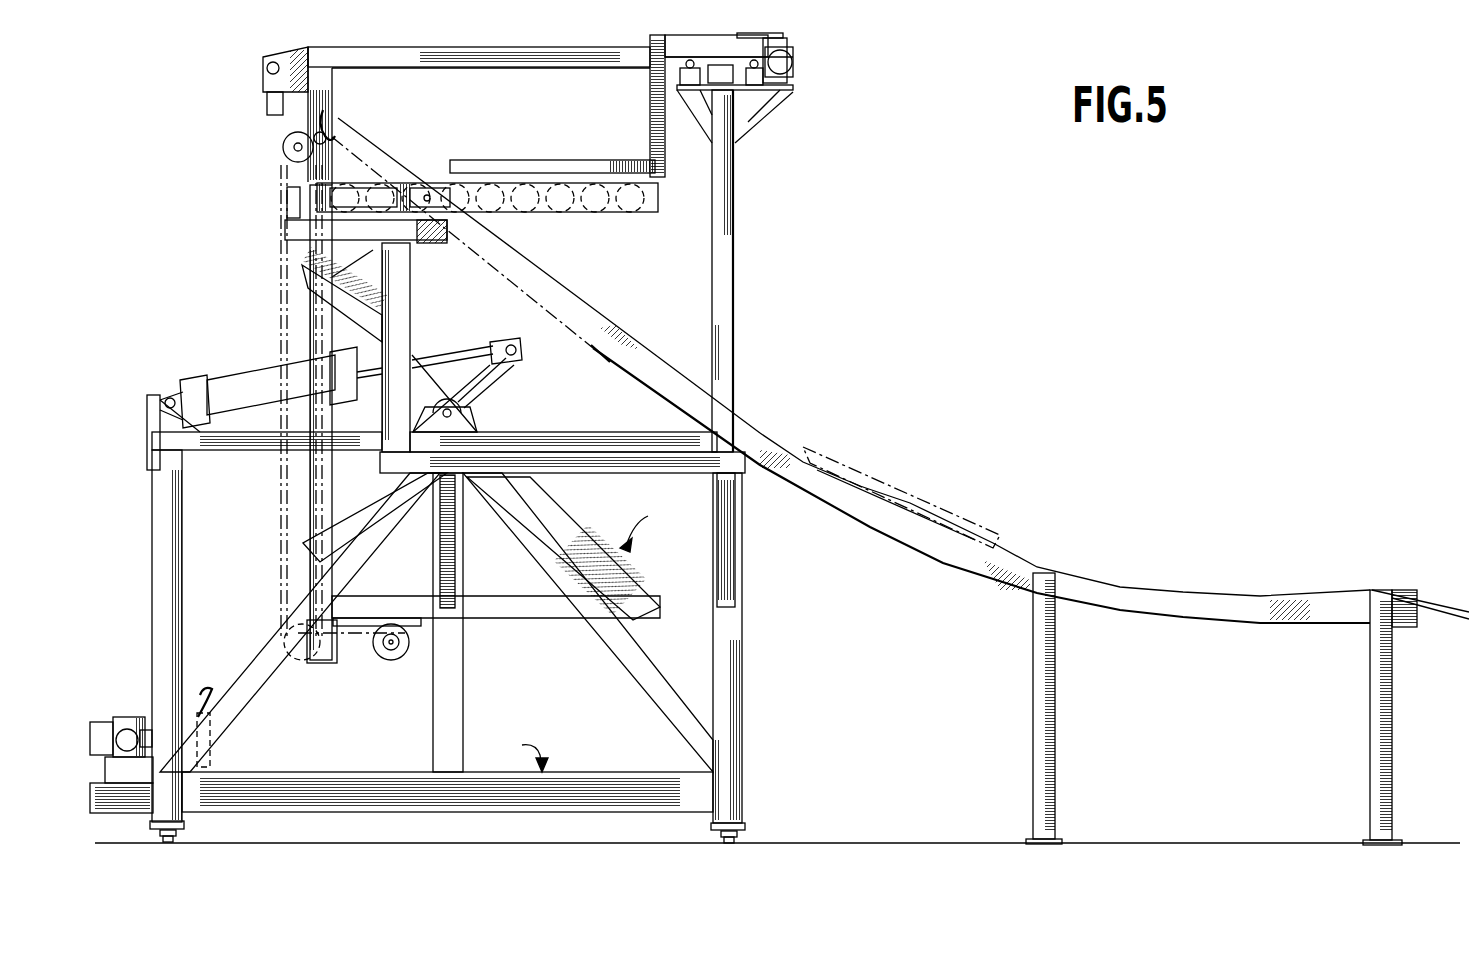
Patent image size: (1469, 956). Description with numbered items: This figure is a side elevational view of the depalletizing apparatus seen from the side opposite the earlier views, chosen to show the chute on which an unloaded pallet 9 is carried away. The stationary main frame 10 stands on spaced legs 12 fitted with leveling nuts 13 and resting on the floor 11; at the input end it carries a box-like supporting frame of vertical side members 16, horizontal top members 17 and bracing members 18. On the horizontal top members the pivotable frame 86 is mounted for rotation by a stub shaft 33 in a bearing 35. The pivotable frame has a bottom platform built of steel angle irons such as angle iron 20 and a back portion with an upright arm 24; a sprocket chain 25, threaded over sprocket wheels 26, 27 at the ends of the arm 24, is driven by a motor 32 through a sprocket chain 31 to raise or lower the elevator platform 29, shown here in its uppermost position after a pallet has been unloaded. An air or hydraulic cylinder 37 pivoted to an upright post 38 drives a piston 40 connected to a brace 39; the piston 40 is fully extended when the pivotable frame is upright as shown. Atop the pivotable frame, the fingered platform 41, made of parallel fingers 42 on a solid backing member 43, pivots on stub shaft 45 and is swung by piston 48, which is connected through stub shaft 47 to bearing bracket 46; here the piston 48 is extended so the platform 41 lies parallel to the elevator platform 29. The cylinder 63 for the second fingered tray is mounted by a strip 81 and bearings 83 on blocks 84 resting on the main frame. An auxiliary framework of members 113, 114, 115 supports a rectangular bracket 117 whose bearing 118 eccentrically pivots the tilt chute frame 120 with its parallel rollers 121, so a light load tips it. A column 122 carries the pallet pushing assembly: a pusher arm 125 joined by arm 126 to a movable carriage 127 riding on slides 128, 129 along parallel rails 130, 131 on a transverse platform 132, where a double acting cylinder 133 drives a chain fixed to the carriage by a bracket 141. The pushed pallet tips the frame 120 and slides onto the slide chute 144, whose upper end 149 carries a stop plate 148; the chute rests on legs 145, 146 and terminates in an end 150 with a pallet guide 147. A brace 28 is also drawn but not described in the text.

The pallet 9 is at (914, 492).
The stationary main frame 10 is at (524, 752).
The floor 11 is at (956, 842).
The legs 12 is at (184, 826).
The leveling nuts 13 is at (176, 842).
The vertical side members 16 is at (148, 524).
The horizontal top members 17 is at (252, 452).
The bracing members 18 is at (265, 694).
The steel angle iron 20 is at (498, 622).
The upright arm 24 is at (348, 670).
The sprocket chain 25 is at (270, 276).
The sprocket wheel 26 is at (304, 662).
The sprocket wheel 27 is at (284, 160).
The brace 28 is at (360, 284).
The elevator platform 29 is at (432, 180).
The sprocket chain 31 is at (362, 616).
The motor 32 is at (406, 662).
The stub shaft 33 is at (464, 411).
The bearing 35 is at (478, 430).
The air or hydraulic cylinder 37 is at (242, 372).
The upright post 38 is at (142, 432).
The brace 39 is at (510, 374).
The piston 40 is at (458, 354).
The fingered platform 41 is at (340, 84).
The parallel fingers 42 is at (552, 50).
The solid backing member 43 is at (278, 132).
The stub shaft 45 is at (330, 144).
The bearing bracket 46 is at (284, 50).
The stub shaft 47 is at (262, 68).
The piston 48 is at (262, 108).
The air or hydraulic cylinder 63 is at (118, 718).
The strip 81 is at (140, 710).
The bearings 83 is at (144, 732).
The blocks 84 is at (178, 758).
The pivotable frame 86 is at (642, 529).
The auxiliary framework member 113 is at (636, 474).
The auxiliary framework member 114 is at (410, 320).
The auxiliary framework member 115 is at (712, 544).
The rectangular bracket 117 is at (278, 230).
The bearing 118 is at (416, 248).
The tilt chute frame 120 is at (646, 226).
The parallel rollers 121 is at (558, 216).
The column 122 is at (736, 202).
The pusher arm 125 is at (548, 160).
The arm 126 is at (650, 134).
The movable carriage 127 is at (712, 40).
The slide 128 is at (674, 76).
The slide 129 is at (776, 90).
The parallel rail 130 is at (680, 90).
The parallel rail 131 is at (760, 108).
The transverse platform 132 is at (727, 124).
The double acting cylinder 133 is at (794, 70).
The bracket 141 is at (768, 36).
The slide chute 144 is at (874, 536).
The leg 145 is at (1056, 786).
The leg 146 is at (1364, 700).
The pallet guide 147 is at (1448, 596).
The stop plate 148 is at (592, 358).
The upper end 149 is at (622, 346).
The end 150 is at (1416, 624).